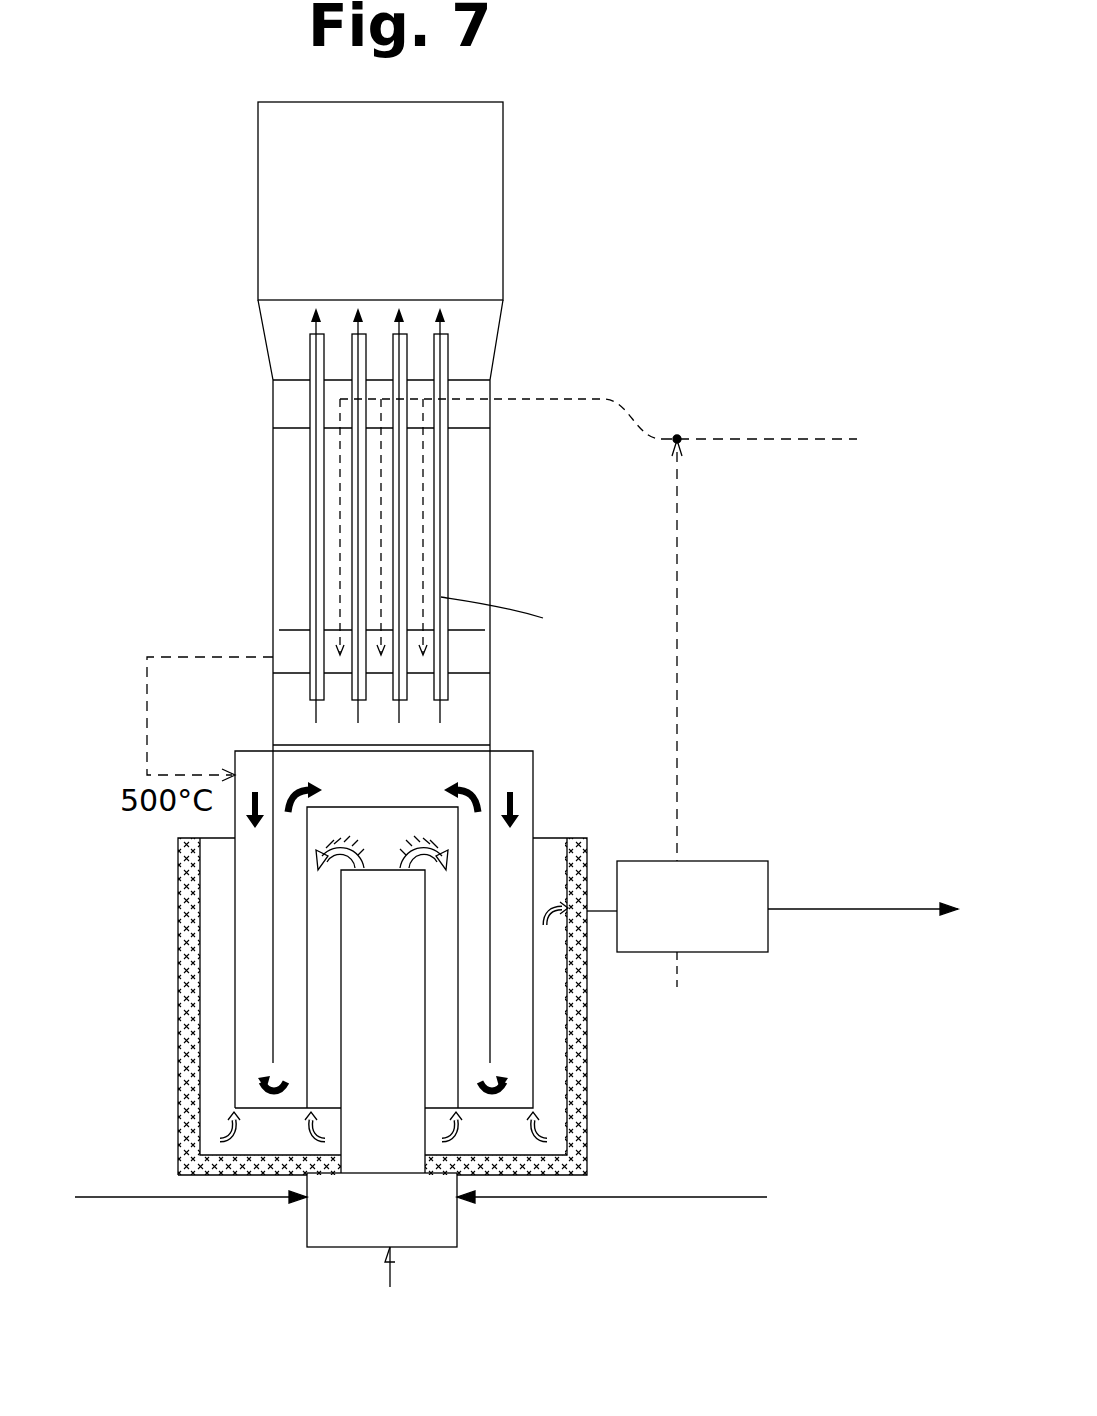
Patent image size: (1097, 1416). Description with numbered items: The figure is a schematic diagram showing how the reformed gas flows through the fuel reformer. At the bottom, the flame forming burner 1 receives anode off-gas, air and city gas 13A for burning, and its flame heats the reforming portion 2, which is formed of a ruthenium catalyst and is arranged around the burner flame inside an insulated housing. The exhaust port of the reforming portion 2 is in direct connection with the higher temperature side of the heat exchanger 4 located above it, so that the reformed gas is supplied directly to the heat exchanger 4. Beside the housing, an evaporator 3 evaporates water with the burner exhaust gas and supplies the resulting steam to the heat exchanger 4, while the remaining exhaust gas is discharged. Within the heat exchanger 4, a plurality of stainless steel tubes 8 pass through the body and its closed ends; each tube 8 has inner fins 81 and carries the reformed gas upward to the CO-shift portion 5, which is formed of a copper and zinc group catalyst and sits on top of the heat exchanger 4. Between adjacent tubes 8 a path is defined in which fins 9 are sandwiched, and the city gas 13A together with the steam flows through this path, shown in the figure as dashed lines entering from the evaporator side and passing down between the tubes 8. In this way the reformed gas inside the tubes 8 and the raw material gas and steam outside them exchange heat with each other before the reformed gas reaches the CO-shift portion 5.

The flame forming burner 1 is at (453, 1225).
The reforming portion 2 is at (472, 766).
The evaporator 3 is at (722, 857).
The heat exchanger 4 is at (246, 573).
The CO-shift portion 5 is at (503, 217).
The stainless steel tubes 8 is at (570, 528).
The inner fins 81 is at (514, 617).
The fins 9 is at (565, 415).
The city gas 13A is at (657, 822).